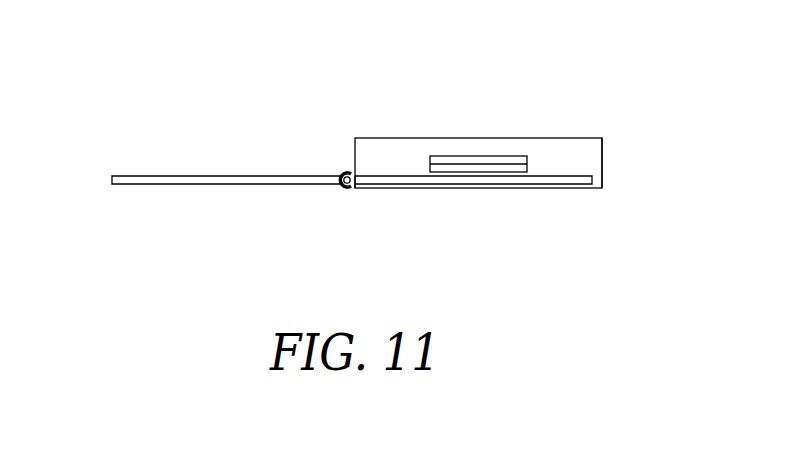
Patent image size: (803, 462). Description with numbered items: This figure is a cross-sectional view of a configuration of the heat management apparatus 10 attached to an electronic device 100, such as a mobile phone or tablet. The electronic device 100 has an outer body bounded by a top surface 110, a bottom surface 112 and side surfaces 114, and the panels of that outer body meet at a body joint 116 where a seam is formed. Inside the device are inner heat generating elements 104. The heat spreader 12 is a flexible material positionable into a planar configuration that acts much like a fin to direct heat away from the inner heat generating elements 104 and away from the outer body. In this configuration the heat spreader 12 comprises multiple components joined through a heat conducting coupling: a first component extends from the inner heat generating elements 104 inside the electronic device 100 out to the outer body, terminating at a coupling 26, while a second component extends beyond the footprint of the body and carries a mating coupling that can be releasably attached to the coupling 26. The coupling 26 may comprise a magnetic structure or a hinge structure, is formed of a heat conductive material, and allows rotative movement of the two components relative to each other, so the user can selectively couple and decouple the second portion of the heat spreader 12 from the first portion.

The heat management apparatus 10 is at (172, 199).
The heat spreader 12 is at (197, 176).
The coupling 26 is at (330, 162).
The electronic device 100 is at (590, 130).
The inner heat generating elements 104 is at (517, 152).
The top surface 110 is at (428, 138).
The bottom surface 112 is at (550, 188).
The side surfaces 114 is at (602, 162).
The body joint 116 is at (366, 198).